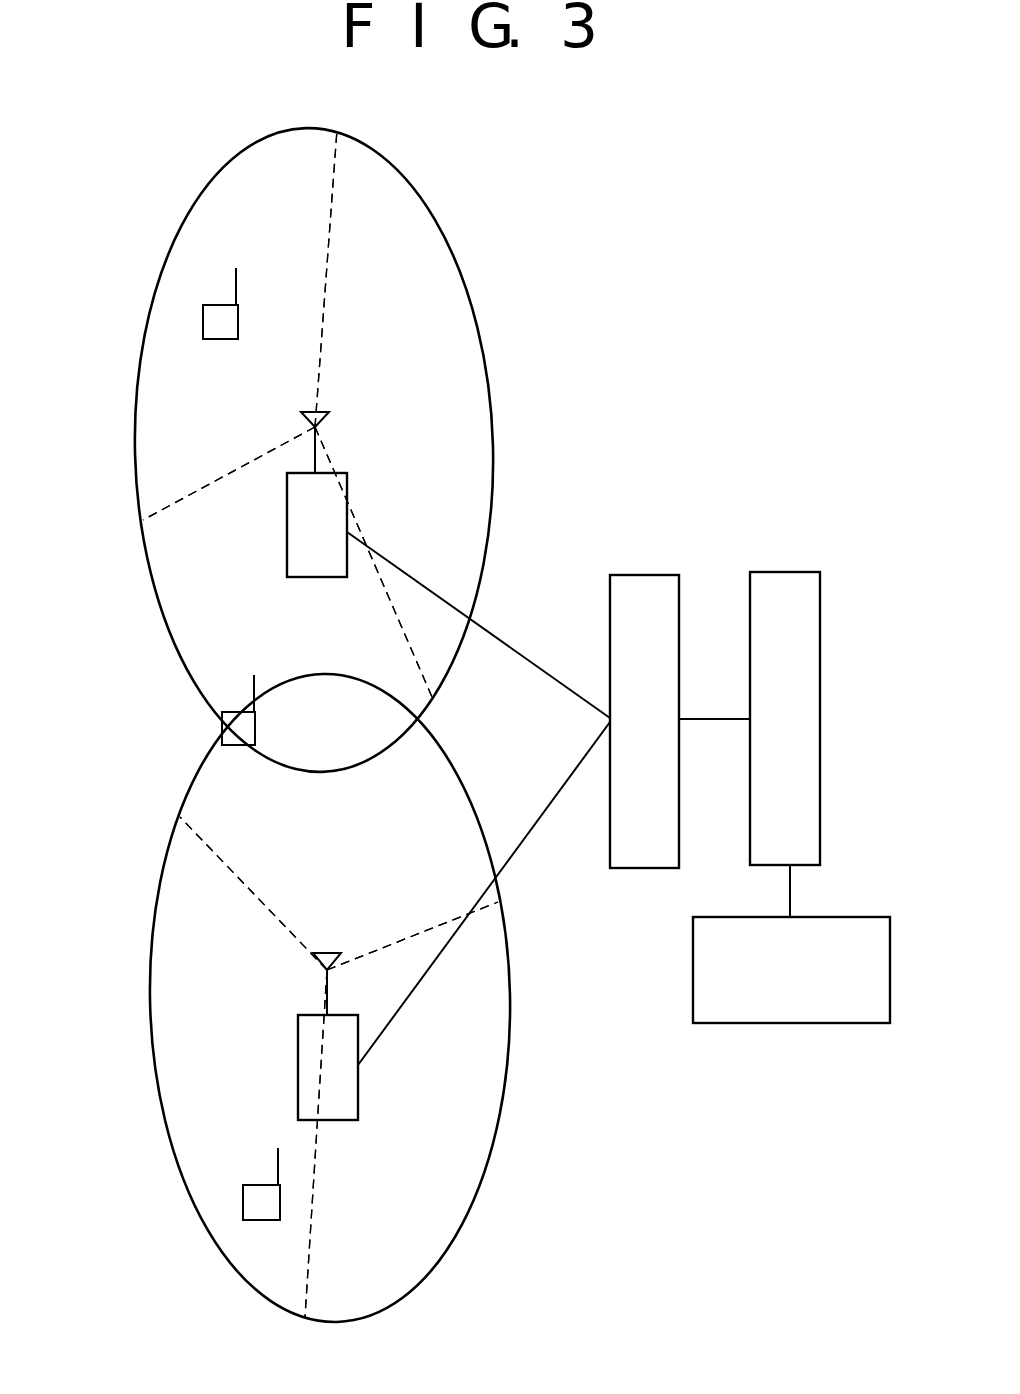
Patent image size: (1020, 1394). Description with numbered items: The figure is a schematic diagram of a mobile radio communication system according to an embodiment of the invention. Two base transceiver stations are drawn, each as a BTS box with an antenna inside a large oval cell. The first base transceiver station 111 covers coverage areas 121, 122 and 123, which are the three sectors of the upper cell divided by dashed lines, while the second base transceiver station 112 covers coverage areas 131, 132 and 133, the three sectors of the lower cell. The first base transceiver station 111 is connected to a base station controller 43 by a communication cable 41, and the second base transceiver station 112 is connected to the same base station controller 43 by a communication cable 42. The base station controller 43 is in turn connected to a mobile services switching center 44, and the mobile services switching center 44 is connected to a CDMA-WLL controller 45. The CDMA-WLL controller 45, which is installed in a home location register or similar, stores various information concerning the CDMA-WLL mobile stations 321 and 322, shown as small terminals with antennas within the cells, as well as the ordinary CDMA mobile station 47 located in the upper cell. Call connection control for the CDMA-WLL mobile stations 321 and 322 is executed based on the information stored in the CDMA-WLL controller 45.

The first base transceiver station 111 is at (287, 527).
The second base transceiver station 112 is at (298, 1053).
The coverage area 121 is at (487, 385).
The coverage area 122 is at (175, 638).
The coverage area 123 is at (150, 345).
The coverage area 131 is at (495, 1108).
The coverage area 132 is at (160, 1100).
The coverage area 133 is at (452, 770).
The CDMA-WLL mobile station 321 is at (256, 727).
The CDMA-WLL mobile station 322 is at (258, 1185).
The CDMA mobile station 47 is at (240, 318).
The communication cable 41 is at (548, 668).
The communication cable 42 is at (535, 835).
The base station controller 43 is at (645, 575).
The mobile services switching center 44 is at (780, 572).
The CDMA-WLL controller 45 is at (815, 917).